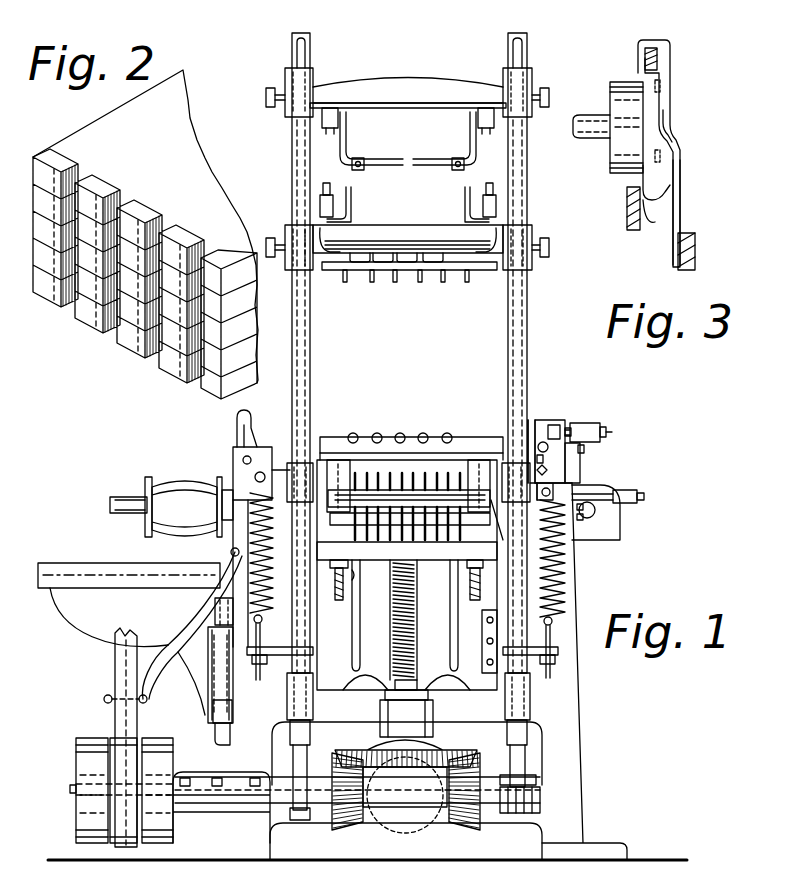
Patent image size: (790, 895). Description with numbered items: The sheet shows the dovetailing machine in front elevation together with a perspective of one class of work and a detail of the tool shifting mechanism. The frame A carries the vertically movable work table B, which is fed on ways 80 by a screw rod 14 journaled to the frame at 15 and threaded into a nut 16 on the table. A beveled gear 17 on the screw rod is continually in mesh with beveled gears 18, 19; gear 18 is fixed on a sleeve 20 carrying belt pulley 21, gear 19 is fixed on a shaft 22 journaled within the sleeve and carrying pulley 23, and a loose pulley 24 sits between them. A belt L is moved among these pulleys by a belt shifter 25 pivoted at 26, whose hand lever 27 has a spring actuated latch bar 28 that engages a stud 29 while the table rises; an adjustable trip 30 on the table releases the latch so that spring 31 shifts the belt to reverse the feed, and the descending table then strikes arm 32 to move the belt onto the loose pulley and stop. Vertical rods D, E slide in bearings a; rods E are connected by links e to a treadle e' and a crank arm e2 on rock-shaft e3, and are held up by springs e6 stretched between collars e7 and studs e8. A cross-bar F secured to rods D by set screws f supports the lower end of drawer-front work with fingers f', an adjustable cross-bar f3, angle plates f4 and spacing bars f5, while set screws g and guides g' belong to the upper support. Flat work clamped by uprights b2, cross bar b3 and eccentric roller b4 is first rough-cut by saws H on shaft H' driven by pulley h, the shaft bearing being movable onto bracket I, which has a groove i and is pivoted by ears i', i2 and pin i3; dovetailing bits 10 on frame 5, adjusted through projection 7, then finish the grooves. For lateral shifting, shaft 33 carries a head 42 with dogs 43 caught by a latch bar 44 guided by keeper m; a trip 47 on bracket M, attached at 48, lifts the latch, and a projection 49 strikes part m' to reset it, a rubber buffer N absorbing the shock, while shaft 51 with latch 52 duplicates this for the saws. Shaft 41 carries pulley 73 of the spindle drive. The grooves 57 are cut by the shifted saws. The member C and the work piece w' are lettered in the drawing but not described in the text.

In FIG. 1, the vertical rod D is at (308, 35).
In FIG. 1, the vertical rod E is at (305, 56).
In FIG. 1, the cross head C is at (425, 98).
In FIG. 1, the set screw g is at (406, 104).
In FIG. 1, the edge and face guide g' is at (408, 139).
In FIG. 1, the set screw f is at (402, 239).
In FIG. 1, the edge guide f5 is at (352, 198).
In FIG. 1, the cross-bar F is at (390, 224).
In FIG. 1, the angle plate f4 is at (340, 276).
In FIG. 1, the finger f' is at (374, 292).
In FIG. 1, the adjustable cross-bar f3 is at (432, 284).
In FIG. 1, the frame 5 is at (464, 445).
In FIG. 1, the dovetailing bit 10 is at (400, 432).
In FIG. 1, the stud e8 is at (292, 462).
In FIG. 1, the cross bar b3 is at (318, 460).
In FIG. 1, the work table B is at (592, 548).
In FIG. 1, the cutter head H is at (409, 448).
In FIG. 1, the eccentric roller b4 is at (363, 486).
In FIG. 1, the projection 7 is at (407, 551).
In FIG. 3, the shaft 33 is at (590, 115).
In FIG. 1, the shaft 33 is at (526, 440).
In FIG. 3, the cylindrical head 42 is at (622, 80).
In FIG. 1, the cylindrical head 42 is at (580, 450).
In FIG. 3, the keeper m is at (664, 144).
In FIG. 1, the keeper m is at (545, 430).
In FIG. 3, the latch bar 44 is at (653, 62).
In FIG. 1, the latch bar 44 is at (560, 425).
In FIG. 3, the dog 43 is at (662, 92).
In FIG. 1, the dog 43 is at (570, 426).
In FIG. 1, the rubber buffer N is at (586, 422).
In FIG. 3, the projection 49 is at (650, 78).
In FIG. 1, the projection 49 is at (584, 448).
In FIG. 1, the bearing a is at (287, 705).
In FIG. 1, the latch 52 is at (598, 494).
In FIG. 1, the shaft 51 is at (594, 513).
In FIG. 1, the frame A is at (582, 732).
In FIG. 1, the attachment point 48 is at (515, 684).
In FIG. 1, the spring e6 is at (250, 528).
In FIG. 1, the collar e7 is at (552, 618).
In FIG. 1, the stud 29 is at (256, 476).
In FIG. 1, the latch bar 28 is at (268, 445).
In FIG. 1, the hand lever 27 is at (234, 428).
In FIG. 1, the shaft H' is at (111, 507).
In FIG. 1, the belt pulley h is at (192, 507).
In FIG. 1, the dovetailed groove i is at (129, 562).
In FIG. 1, the bracket I is at (48, 580).
In FIG. 1, the pivot 26 is at (230, 552).
In FIG. 1, the belt shifter 25 is at (104, 699).
In FIG. 1, the belt L is at (113, 652).
In FIG. 1, the belt pulley 23 is at (88, 846).
In FIG. 1, the loose pulley 24 is at (118, 846).
In FIG. 1, the belt pulley 21 is at (155, 846).
In FIG. 1, the shaft 22 is at (68, 790).
In FIG. 1, the sleeve 20 is at (282, 862).
In FIG. 1, the spring 31 is at (208, 650).
In FIG. 1, the pin i3 is at (208, 688).
In FIG. 1, the ear i2 is at (233, 706).
In FIG. 1, the ear i' is at (230, 620).
In FIG. 1, the arm 32 is at (345, 578).
In FIG. 1, the trip 30 is at (348, 600).
In FIG. 1, the upright b2 is at (470, 598).
In FIG. 1, the nut 16 is at (425, 645).
In FIG. 1, the screw rod 14 is at (419, 686).
In FIG. 1, the journal 15 is at (415, 717).
In FIG. 1, the way 80 is at (335, 704).
In FIG. 1, the beveled gear 17 is at (365, 750).
In FIG. 1, the beveled gear 18 is at (345, 830).
In FIG. 1, the beveled gear 19 is at (465, 830).
In FIG. 1, the driving shaft 41 is at (400, 805).
In FIG. 1, the pulley 73 is at (412, 810).
In FIG. 1, the link e is at (402, 765).
In FIG. 1, the crank arm e2 is at (296, 822).
In FIG. 1, the treadle e' is at (534, 784).
In FIG. 1, the rock-shaft e3 is at (541, 796).
In FIG. 2, the block w' is at (145, 226).
In FIG. 2, the groove 57 is at (103, 333).
In FIG. 3, the trip part m' is at (690, 121).
In FIG. 3, the trip 47 is at (682, 182).
In FIG. 3, the bracket M is at (698, 250).